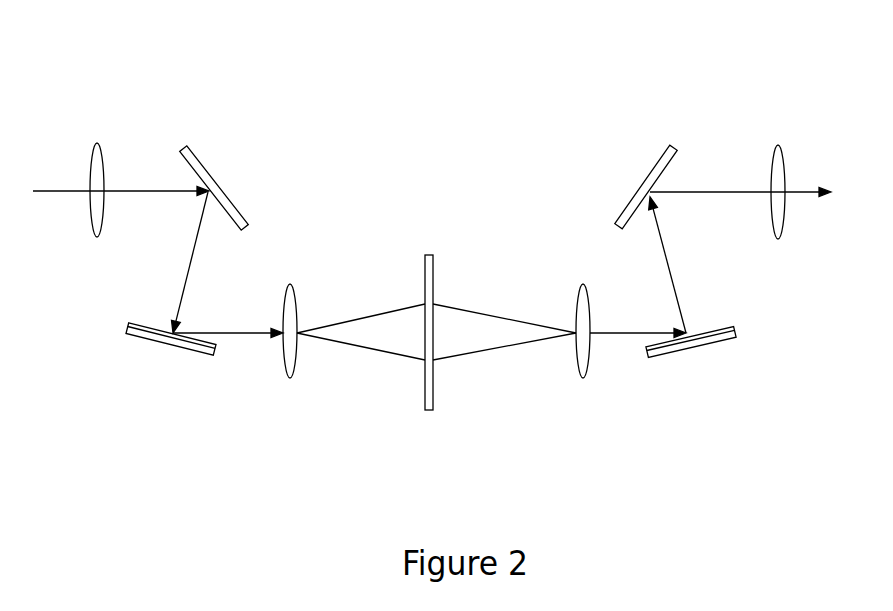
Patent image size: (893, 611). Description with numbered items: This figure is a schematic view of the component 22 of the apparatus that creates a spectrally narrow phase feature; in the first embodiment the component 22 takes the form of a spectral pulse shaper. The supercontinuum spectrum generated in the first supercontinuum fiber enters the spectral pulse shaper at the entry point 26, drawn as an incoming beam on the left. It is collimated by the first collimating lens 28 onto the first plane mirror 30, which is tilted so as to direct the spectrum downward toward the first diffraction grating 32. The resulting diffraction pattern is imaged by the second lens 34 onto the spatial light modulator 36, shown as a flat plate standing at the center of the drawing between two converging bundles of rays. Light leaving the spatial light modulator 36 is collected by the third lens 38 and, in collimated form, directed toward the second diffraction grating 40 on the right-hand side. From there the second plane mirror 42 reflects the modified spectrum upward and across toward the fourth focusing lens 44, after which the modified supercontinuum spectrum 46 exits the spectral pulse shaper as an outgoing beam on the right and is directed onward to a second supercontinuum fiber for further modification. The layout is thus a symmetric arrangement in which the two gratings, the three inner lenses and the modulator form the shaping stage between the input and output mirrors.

The component 22 is at (76, 48).
The entry point of the supercontinuum spectrum 26 is at (57, 174).
The first collimating lens 28 is at (98, 145).
The first plane mirror 30 is at (180, 157).
The first diffraction grating 32 is at (134, 321).
The second lens 34 is at (294, 368).
The spatial light modulator 36 is at (433, 395).
The third lens 38 is at (588, 366).
The second diffraction grating 40 is at (730, 323).
The second plane mirror 42 is at (674, 158).
The fourth (focusing) lens 44 is at (777, 147).
The modified supercontinuum spectrum 46 is at (808, 174).